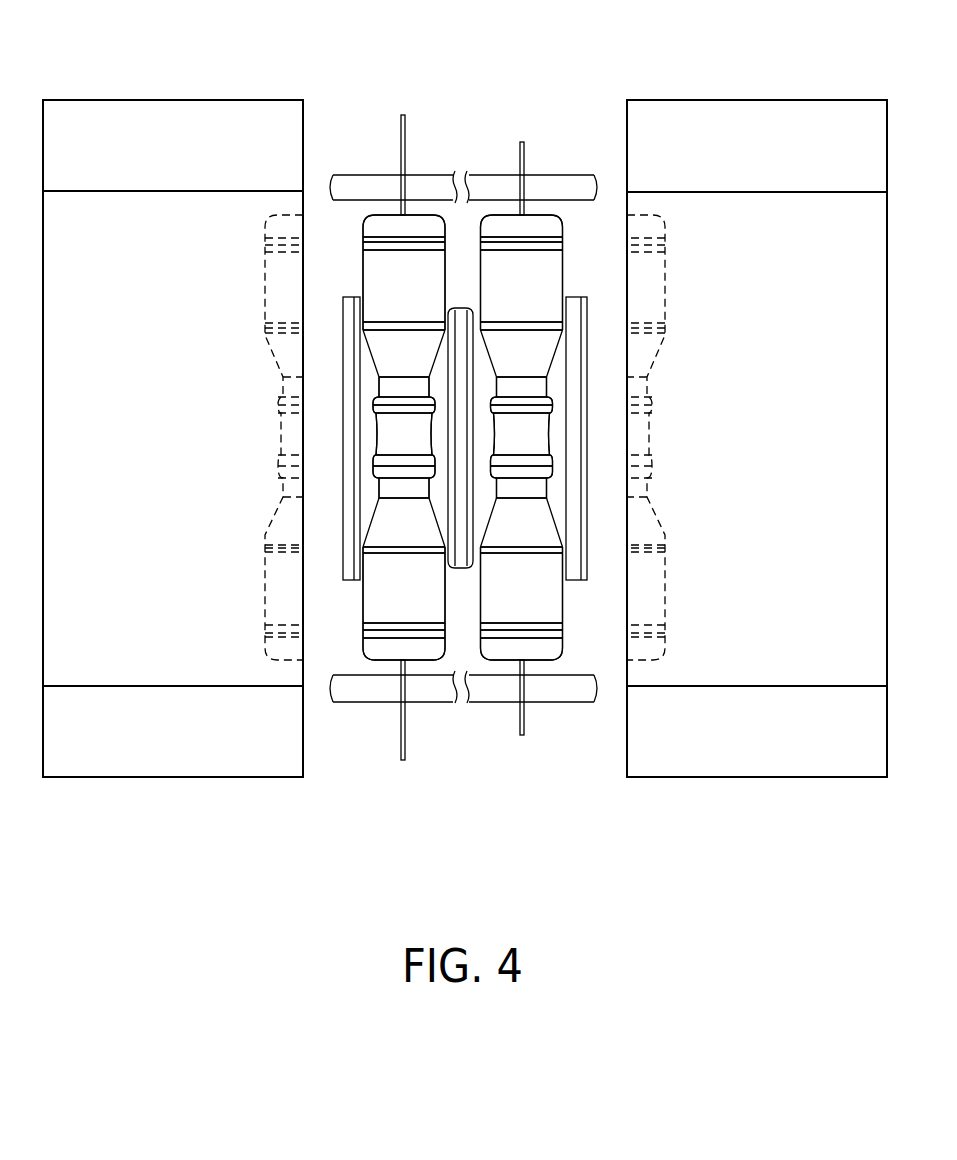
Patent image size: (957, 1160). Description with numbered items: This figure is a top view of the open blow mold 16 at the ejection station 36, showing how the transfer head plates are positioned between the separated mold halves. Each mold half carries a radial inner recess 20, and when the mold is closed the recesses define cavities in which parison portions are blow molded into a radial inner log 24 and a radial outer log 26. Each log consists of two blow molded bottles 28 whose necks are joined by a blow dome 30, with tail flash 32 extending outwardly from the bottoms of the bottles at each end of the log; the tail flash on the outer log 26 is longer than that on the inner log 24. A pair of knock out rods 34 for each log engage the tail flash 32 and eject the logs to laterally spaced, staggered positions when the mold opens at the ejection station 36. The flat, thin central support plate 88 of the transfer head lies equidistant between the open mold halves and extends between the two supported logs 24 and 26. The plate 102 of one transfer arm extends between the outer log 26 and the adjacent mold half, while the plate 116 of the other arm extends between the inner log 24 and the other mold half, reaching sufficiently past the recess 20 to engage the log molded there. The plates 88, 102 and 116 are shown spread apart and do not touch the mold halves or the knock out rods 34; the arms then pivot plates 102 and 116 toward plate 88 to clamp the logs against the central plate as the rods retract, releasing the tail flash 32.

The blow mold 16 is at (106, 92).
The radial inner recess 20 is at (268, 513).
The radial inner log 24 is at (576, 601).
The radial outer log 26 is at (352, 599).
The blow molded bottle 28 is at (463, 437).
The blow dome 30 is at (463, 437).
The tail flash 32 is at (520, 180).
The knock out rod 34 is at (403, 176).
The ejection station 36 is at (461, 495).
The support plate 88 is at (460, 307).
The plate 102 is at (348, 297).
The plate 116 is at (582, 297).